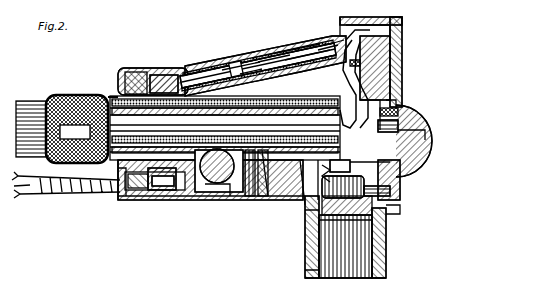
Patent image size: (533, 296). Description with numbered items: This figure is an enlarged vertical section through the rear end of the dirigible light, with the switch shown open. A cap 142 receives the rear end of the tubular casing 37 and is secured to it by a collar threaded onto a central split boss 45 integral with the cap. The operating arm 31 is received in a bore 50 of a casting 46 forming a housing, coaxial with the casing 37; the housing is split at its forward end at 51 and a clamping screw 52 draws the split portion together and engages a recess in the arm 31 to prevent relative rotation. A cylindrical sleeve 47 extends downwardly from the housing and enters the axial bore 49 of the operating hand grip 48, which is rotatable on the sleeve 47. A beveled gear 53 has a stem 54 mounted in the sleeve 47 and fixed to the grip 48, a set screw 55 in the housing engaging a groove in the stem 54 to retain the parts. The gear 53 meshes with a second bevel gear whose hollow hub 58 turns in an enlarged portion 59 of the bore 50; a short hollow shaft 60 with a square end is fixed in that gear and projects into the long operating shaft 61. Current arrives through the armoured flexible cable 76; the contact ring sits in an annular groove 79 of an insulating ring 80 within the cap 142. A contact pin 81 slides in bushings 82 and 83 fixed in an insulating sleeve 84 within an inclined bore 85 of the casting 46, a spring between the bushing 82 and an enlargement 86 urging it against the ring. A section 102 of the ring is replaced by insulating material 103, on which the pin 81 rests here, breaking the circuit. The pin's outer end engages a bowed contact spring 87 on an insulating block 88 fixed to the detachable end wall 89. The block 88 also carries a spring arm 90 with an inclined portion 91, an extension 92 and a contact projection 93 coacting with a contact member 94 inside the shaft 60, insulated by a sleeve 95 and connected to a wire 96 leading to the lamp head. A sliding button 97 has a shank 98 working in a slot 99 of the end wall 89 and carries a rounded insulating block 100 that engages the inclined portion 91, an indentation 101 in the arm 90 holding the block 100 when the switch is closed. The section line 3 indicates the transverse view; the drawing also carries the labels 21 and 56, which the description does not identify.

The section line 3— 3 is at (195, 25).
The firing pin 21 is at (75, 132).
The operating arm 31 is at (80, 96).
The tubular casing 37 is at (200, 70).
The split boss 45 is at (116, 96).
The casting 46 is at (300, 56).
The cylindrical sleeve 47 is at (388, 238).
The operating hand grip 48 is at (304, 262).
The axial bore 49 is at (318, 238).
The bore 50 is at (268, 58).
The split portion 51 is at (228, 196).
The clamping screw 52 is at (217, 183).
The beveled gear 53 is at (392, 208).
The stem 54 is at (405, 196).
The set screw 55 is at (402, 209).
The spring seat 56 is at (400, 168).
The hollow hub 58 is at (324, 46).
The enlarged portion 59 is at (270, 196).
The short hollow shaft 60 is at (252, 196).
The operating shaft 61 is at (78, 193).
The armoured flexible cable 76 is at (142, 196).
The annular groove 79 is at (160, 196).
The ring of insulating material 80 is at (133, 72).
The contact pin 81 is at (350, 30).
The bushing 82 is at (338, 40).
The bushing 83 is at (232, 66).
The sleeve of insulating material 84 is at (285, 50).
The inclined bore 85 is at (245, 72).
The enlargement 86 is at (268, 56).
The bowed contact spring 87 is at (372, 24).
The block of insulating material 88 is at (400, 18).
The detachable end wall 89 is at (402, 36).
The spring arm 90 is at (392, 96).
The inclined portion 91 is at (400, 122).
The extension 92 is at (330, 160).
The contact projection 93 is at (351, 84).
The contact member 94 is at (302, 205).
The sleeve 95 is at (262, 196).
The insulated wire 96 is at (118, 196).
The sliding button 97 is at (428, 138).
The shank 98 is at (432, 132).
The slot 99 is at (405, 110).
The rounded block of insulating material 100 is at (350, 168).
The indentation 101 is at (400, 102).
The cut-out section 102 is at (196, 66).
The section of insulating material 103 is at (238, 60).
The cap 142 is at (150, 68).